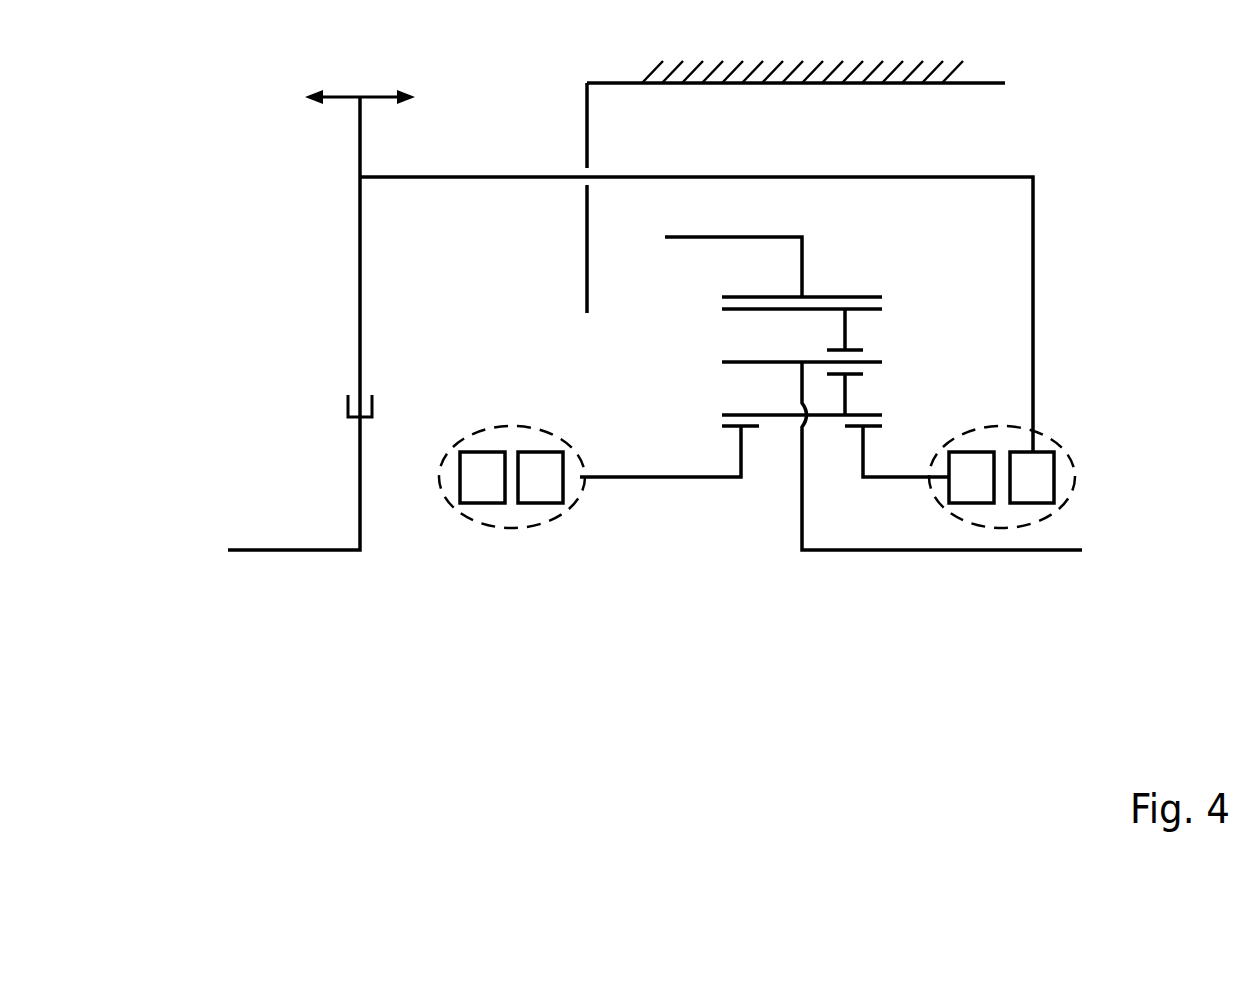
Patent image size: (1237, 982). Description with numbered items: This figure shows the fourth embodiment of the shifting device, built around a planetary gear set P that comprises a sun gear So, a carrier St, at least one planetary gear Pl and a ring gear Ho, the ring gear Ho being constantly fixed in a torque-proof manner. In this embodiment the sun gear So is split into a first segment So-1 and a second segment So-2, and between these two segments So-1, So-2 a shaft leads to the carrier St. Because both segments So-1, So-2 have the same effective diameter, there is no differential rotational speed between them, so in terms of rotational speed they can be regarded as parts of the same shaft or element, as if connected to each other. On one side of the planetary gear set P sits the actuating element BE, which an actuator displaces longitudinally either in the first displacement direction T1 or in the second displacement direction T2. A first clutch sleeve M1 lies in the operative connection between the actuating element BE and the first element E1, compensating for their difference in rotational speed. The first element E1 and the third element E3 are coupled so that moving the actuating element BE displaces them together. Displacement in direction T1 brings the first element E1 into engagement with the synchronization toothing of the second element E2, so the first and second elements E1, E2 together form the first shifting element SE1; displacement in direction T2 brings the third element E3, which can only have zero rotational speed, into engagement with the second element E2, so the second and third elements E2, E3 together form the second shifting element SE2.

The actuating element BE is at (360, 255).
The first displacement direction T1 is at (387, 78).
The second displacement direction T2 is at (332, 78).
The first clutch sleeve M1 is at (340, 415).
The first shifting element SE1 is at (577, 502).
The second shifting element SE2 is at (1072, 455).
The first element E1 is at (480, 505).
The second element E2 is at (545, 490).
The third element E3 is at (1040, 490).
The ring gear Ho is at (853, 297).
The planetary gear Pl is at (845, 329).
The carrier St is at (882, 362).
The planetary gear set P is at (802, 553).
The first segment of the sun gear So-1 is at (748, 430).
The second segment of the sun gear So-2 is at (850, 430).
The sun gear So is at (832, 817).